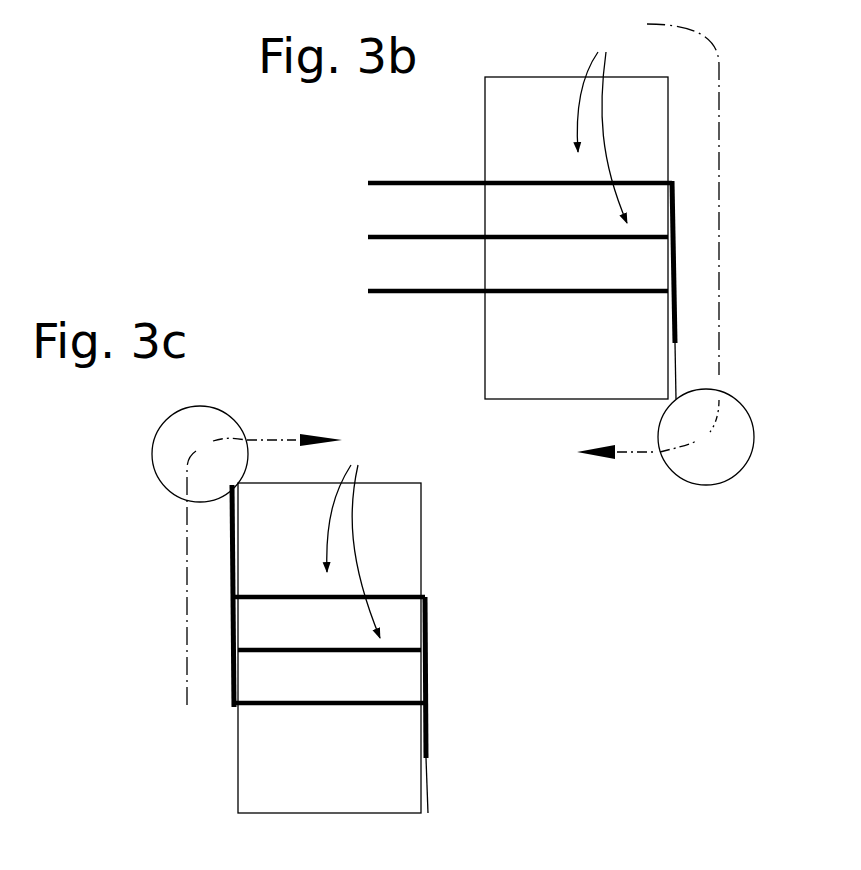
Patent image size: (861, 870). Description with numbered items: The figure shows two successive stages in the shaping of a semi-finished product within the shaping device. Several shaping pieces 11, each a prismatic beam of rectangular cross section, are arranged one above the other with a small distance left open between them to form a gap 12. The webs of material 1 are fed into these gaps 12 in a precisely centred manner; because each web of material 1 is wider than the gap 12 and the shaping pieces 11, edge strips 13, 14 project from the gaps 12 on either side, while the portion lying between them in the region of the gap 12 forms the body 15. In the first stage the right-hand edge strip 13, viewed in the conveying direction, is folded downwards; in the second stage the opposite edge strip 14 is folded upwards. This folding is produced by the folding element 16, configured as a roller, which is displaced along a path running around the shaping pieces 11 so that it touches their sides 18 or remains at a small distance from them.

In FIG. 3b, the web of material 1 is at (413, 231).
In FIG. 3c, the web of material 1 is at (276, 654).
In FIG. 3b, the shaping piece 11 is at (602, 124).
In FIG. 3c, the shaping piece 11 is at (353, 540).
In FIG. 3b, the gap 12 is at (473, 312).
In FIG. 3c, the gap 12 is at (217, 666).
In FIG. 3b, the edge strip 13 is at (672, 223).
In FIG. 3c, the edge strip 13 is at (425, 637).
In FIG. 3b, the edge strip 14 is at (430, 291).
In FIG. 3c, the edge strip 14 is at (233, 583).
In FIG. 3b, the body 15 is at (534, 240).
In FIG. 3c, the body 15 is at (270, 595).
In FIG. 3b, the folding element 16 is at (737, 442).
In FIG. 3c, the folding element 16 is at (175, 430).
In FIG. 3b, the side 18 is at (485, 131).
In FIG. 3c, the side 18 is at (329, 648).